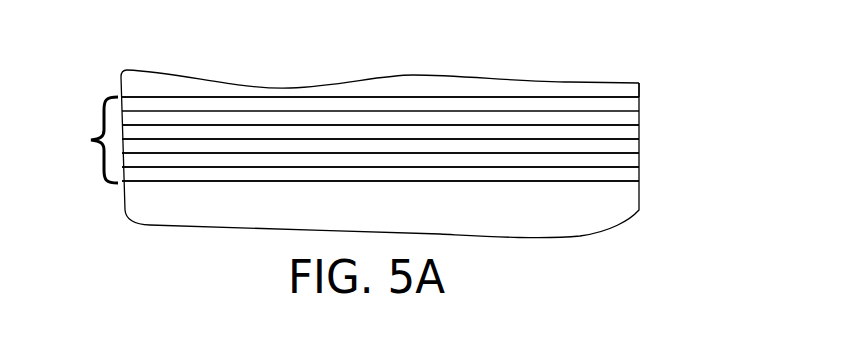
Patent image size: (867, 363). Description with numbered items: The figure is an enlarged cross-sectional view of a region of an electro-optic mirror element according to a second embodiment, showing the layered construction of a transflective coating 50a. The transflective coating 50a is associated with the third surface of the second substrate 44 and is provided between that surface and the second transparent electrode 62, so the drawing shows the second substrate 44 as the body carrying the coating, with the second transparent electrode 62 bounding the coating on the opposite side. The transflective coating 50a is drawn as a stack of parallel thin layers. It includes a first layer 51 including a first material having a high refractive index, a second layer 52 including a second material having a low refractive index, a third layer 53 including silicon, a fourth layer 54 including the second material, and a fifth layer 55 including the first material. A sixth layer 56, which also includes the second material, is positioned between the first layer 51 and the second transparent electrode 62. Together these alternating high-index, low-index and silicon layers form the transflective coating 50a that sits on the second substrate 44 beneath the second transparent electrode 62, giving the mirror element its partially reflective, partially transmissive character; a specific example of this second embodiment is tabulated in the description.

The second substrate 44 is at (625, 198).
The transflective coating 50a is at (341, 140).
The first layer 51 is at (627, 118).
The second layer 52 is at (627, 130).
The third layer 53 is at (628, 147).
The fourth layer 54 is at (633, 158).
The fifth layer 55 is at (623, 173).
The sixth layer 56 is at (517, 105).
The second transparent electrode 62 is at (627, 90).